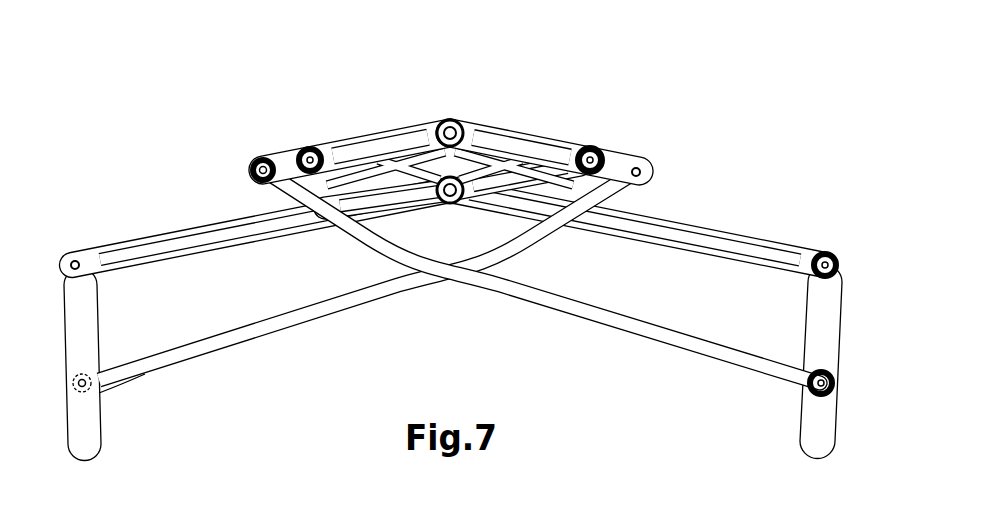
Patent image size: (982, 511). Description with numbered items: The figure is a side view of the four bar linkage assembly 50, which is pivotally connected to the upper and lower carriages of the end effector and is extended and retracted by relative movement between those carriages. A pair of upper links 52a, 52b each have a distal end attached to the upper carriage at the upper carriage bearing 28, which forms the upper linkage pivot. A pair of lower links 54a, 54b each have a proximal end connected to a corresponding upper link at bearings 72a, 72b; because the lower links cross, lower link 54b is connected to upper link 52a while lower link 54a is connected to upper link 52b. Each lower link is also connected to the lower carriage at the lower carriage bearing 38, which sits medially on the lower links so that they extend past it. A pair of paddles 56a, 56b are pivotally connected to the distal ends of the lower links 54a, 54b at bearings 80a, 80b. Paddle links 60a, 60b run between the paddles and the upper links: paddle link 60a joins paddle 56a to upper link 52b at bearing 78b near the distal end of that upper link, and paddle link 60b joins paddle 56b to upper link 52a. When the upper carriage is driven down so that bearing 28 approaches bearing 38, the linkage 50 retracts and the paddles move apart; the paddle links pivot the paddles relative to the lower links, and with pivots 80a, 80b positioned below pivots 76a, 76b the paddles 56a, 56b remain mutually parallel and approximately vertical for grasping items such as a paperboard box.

The four bar linkage assembly 50 is at (727, 34).
The upper carriage bearing 28 is at (456, 118).
The lower carriage bearing 38 is at (450, 204).
The upper link 52a is at (377, 136).
The upper link 52b is at (523, 140).
The lower link 54a is at (180, 230).
The lower link 54b is at (747, 240).
The paddle 56a is at (87, 442).
The paddle 56b is at (827, 333).
The paddle link 60a is at (273, 323).
The paddle link 60b is at (677, 335).
The bearing 72a is at (305, 146).
The bearing 72b is at (596, 154).
The pivot 76a is at (72, 252).
The pivot 76b is at (838, 257).
The bearing 78b is at (258, 160).
The bearing 80a is at (103, 390).
The bearing 80b is at (834, 393).